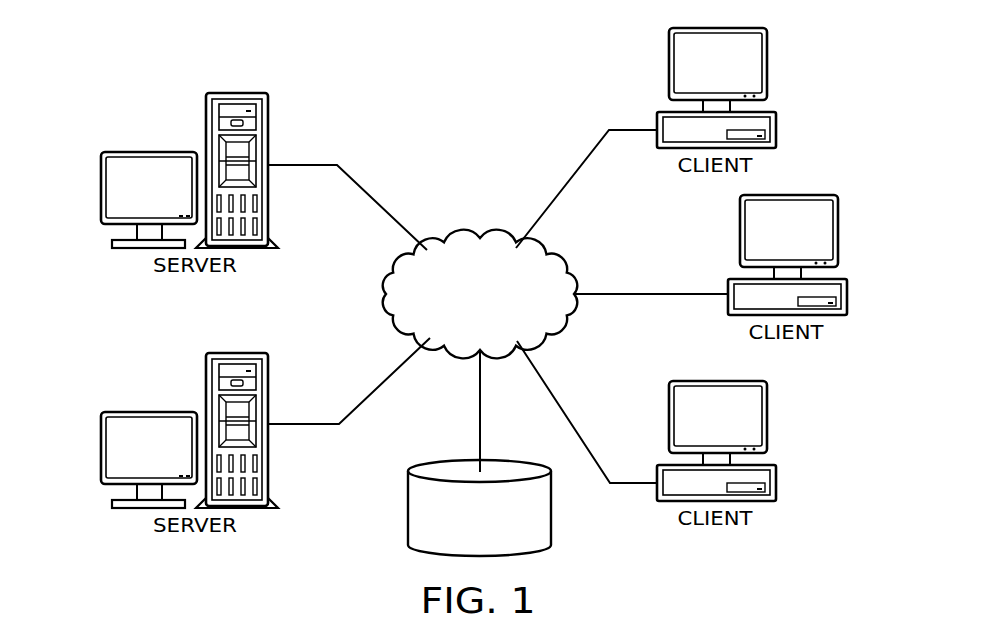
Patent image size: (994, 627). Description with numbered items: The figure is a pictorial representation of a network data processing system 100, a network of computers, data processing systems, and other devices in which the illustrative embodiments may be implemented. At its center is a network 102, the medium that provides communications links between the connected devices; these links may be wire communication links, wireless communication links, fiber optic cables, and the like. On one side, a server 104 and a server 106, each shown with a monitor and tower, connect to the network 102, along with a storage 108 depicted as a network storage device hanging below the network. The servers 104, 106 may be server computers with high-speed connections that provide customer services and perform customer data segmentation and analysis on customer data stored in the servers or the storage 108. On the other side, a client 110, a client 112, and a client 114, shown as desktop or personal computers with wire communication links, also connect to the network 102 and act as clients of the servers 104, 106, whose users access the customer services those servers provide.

The network data processing system 100 is at (342, 68).
The network 102 is at (452, 240).
The server 104 is at (100, 190).
The server 106 is at (100, 447).
The storage 108 is at (408, 508).
The client 110 is at (777, 120).
The client 112 is at (849, 302).
The client 114 is at (777, 494).